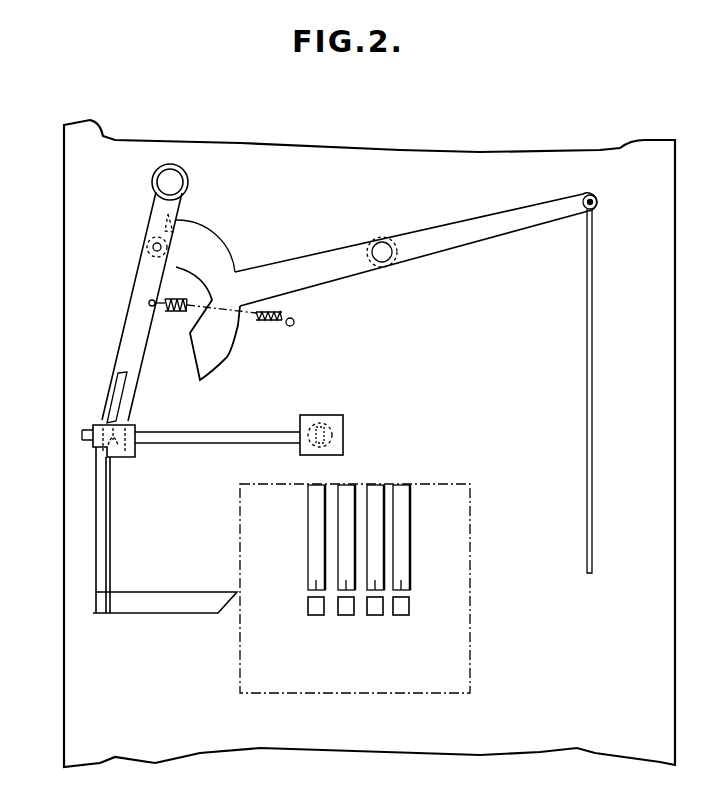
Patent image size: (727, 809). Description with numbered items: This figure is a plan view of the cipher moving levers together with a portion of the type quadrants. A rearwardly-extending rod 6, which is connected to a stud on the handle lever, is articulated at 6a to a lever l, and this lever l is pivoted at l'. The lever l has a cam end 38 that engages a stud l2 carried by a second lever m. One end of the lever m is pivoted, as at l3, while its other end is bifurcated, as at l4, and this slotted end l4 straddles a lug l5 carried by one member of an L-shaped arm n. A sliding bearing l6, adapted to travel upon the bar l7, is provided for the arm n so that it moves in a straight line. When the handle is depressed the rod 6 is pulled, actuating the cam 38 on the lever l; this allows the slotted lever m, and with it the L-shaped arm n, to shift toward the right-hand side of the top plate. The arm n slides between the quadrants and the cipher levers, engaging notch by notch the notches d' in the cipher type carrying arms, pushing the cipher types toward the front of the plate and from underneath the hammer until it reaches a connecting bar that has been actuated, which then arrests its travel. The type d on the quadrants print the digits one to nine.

The lever l is at (386, 244).
The pivot of lever l l' is at (395, 268).
The stud l2 is at (153, 247).
The pivot of lever m l3 is at (173, 188).
The bifurcated end l4 is at (118, 393).
The lug l5 is at (113, 438).
The sliding bearing l6 is at (132, 430).
The bar l7 is at (242, 435).
The lever m is at (135, 273).
The L-shaped arm n is at (103, 518).
The cam end 38 is at (223, 348).
The rod 6 is at (592, 417).
The articulation 6a is at (597, 195).
The type d is at (357, 537).
The notch d' is at (358, 625).